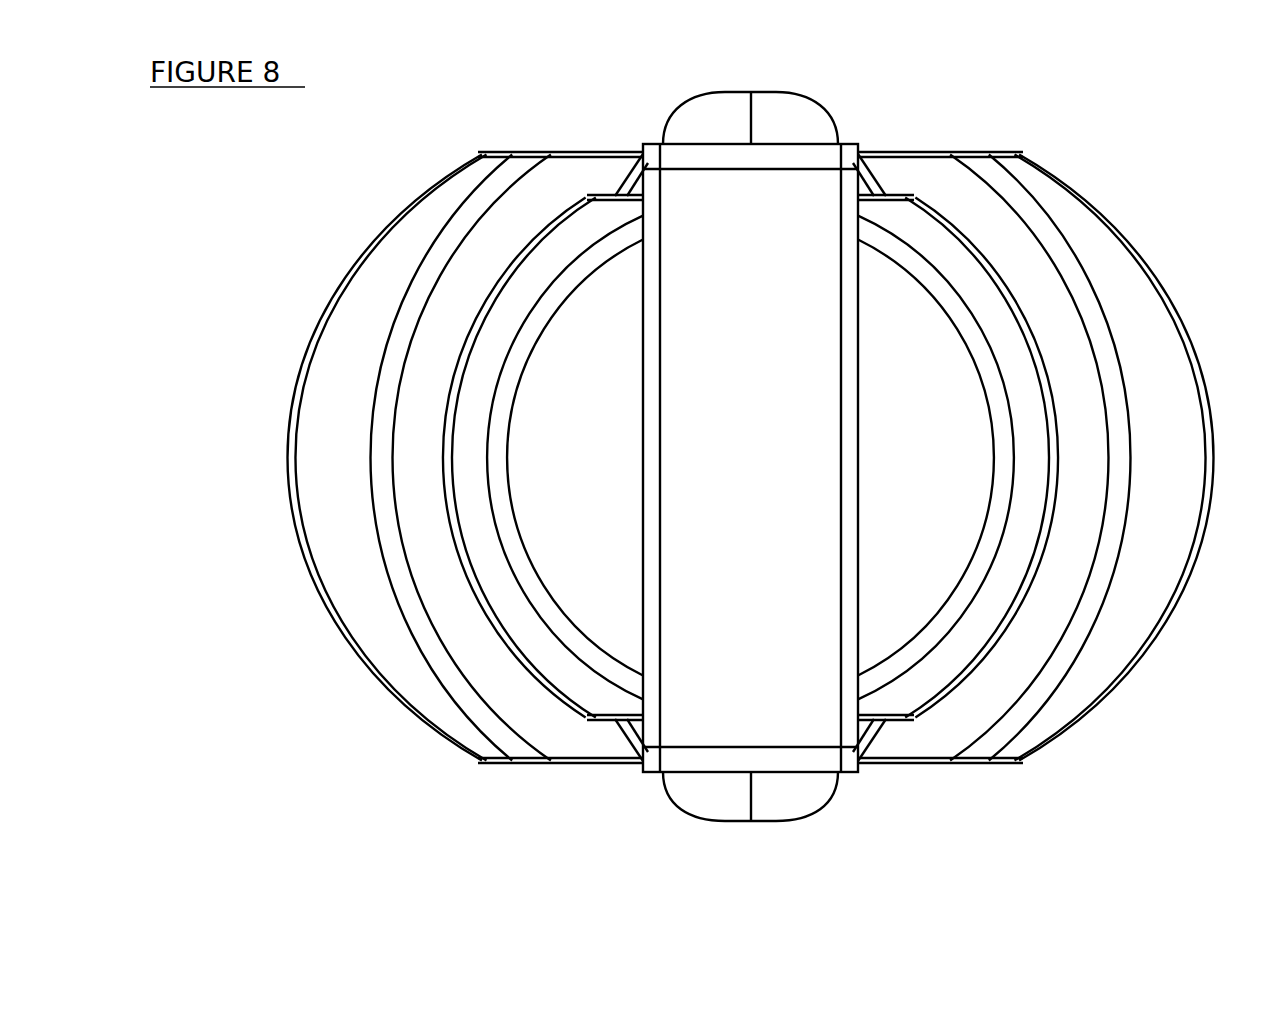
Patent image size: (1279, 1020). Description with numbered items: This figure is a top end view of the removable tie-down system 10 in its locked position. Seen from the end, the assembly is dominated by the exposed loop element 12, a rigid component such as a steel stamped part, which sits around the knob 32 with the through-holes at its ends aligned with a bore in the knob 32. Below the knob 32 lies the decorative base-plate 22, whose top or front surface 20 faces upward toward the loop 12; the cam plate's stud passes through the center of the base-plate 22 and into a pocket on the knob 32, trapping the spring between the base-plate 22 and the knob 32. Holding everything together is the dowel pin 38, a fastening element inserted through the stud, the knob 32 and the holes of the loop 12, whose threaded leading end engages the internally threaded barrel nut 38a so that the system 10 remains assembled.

The tie-down system 10 is at (1127, 117).
The loop element 12 is at (760, 690).
The top or front surface 20 is at (470, 635).
The base-plate 22 is at (297, 551).
The knob 32 is at (555, 365).
The dowel pin 38 is at (778, 104).
The barrel nut 38a is at (712, 797).